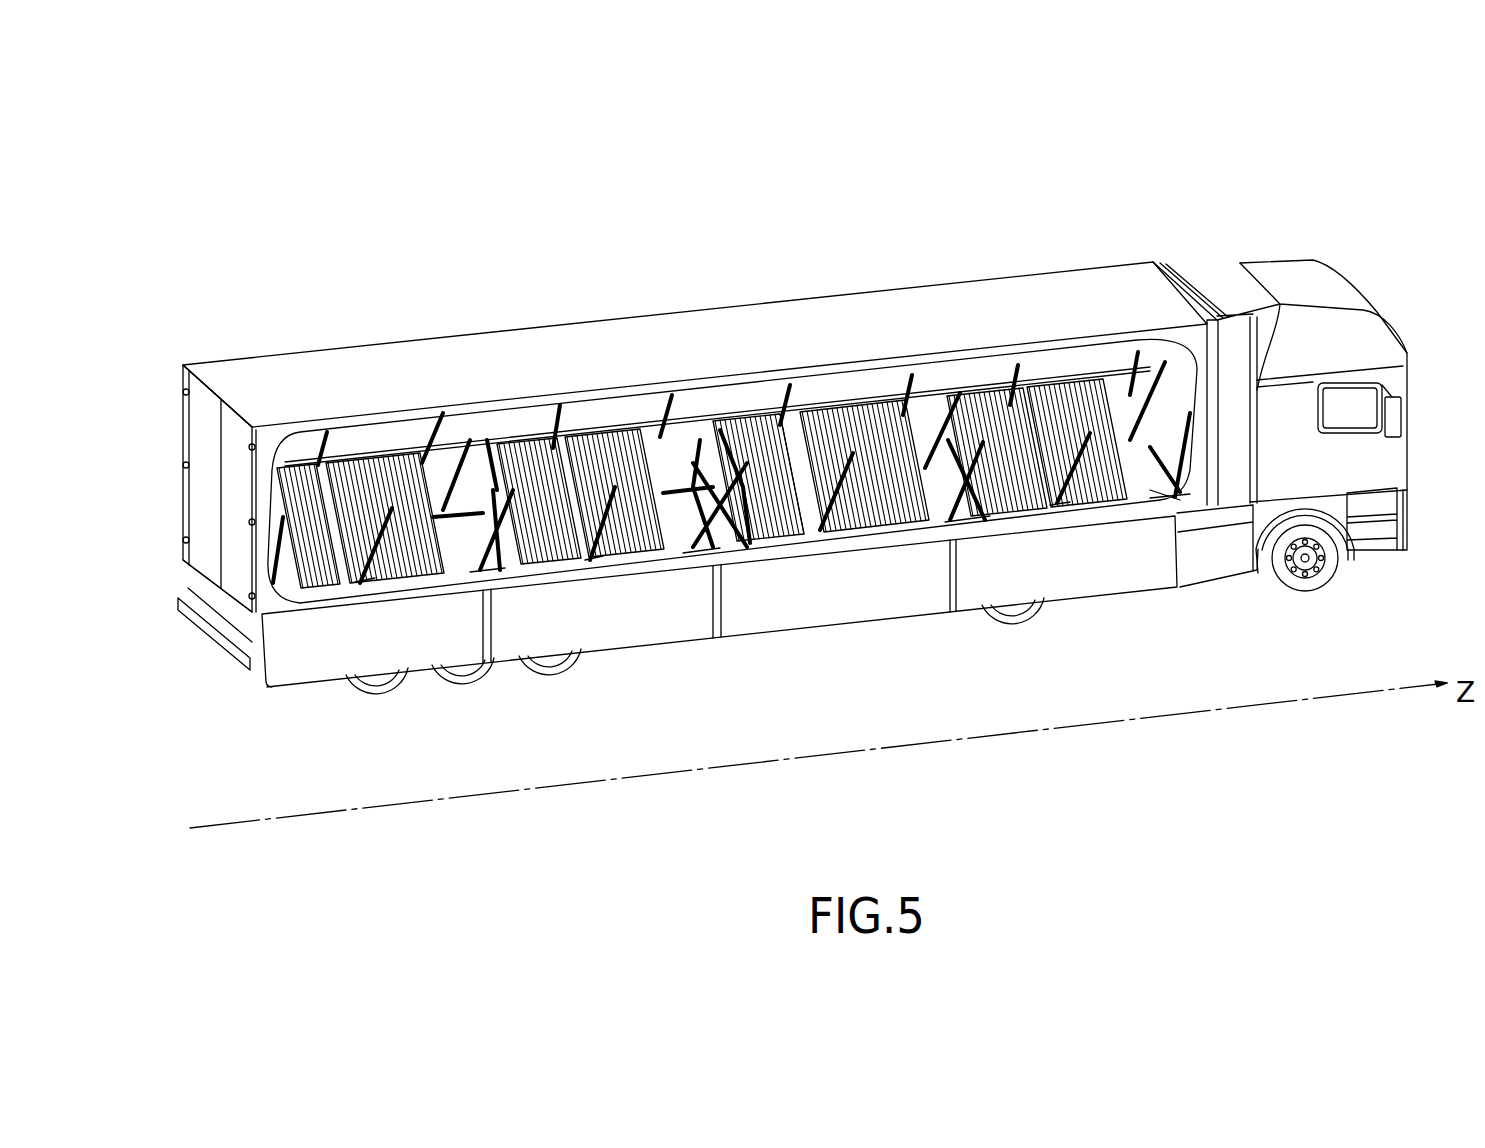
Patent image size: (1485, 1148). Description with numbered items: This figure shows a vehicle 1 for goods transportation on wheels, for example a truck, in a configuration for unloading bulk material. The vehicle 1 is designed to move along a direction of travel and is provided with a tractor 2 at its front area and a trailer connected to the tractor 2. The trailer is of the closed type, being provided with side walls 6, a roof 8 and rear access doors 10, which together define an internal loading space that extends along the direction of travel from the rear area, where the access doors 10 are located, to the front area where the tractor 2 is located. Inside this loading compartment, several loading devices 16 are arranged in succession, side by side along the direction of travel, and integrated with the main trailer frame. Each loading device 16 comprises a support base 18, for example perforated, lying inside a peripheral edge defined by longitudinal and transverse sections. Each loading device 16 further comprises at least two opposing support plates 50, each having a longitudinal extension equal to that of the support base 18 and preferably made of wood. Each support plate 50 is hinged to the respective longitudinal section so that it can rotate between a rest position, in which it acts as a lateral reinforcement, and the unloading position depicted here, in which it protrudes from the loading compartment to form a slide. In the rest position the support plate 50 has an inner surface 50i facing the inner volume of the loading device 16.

The vehicle 1 is at (1205, 160).
The tractor 2 is at (1420, 323).
The side walls 6 is at (1195, 470).
The roof 8 is at (845, 312).
The rear access doors 10 is at (200, 436).
The loading device 16 is at (372, 454).
The support base 18 is at (1055, 373).
The support plate 50 is at (380, 645).
The inner surface 50i is at (443, 624).